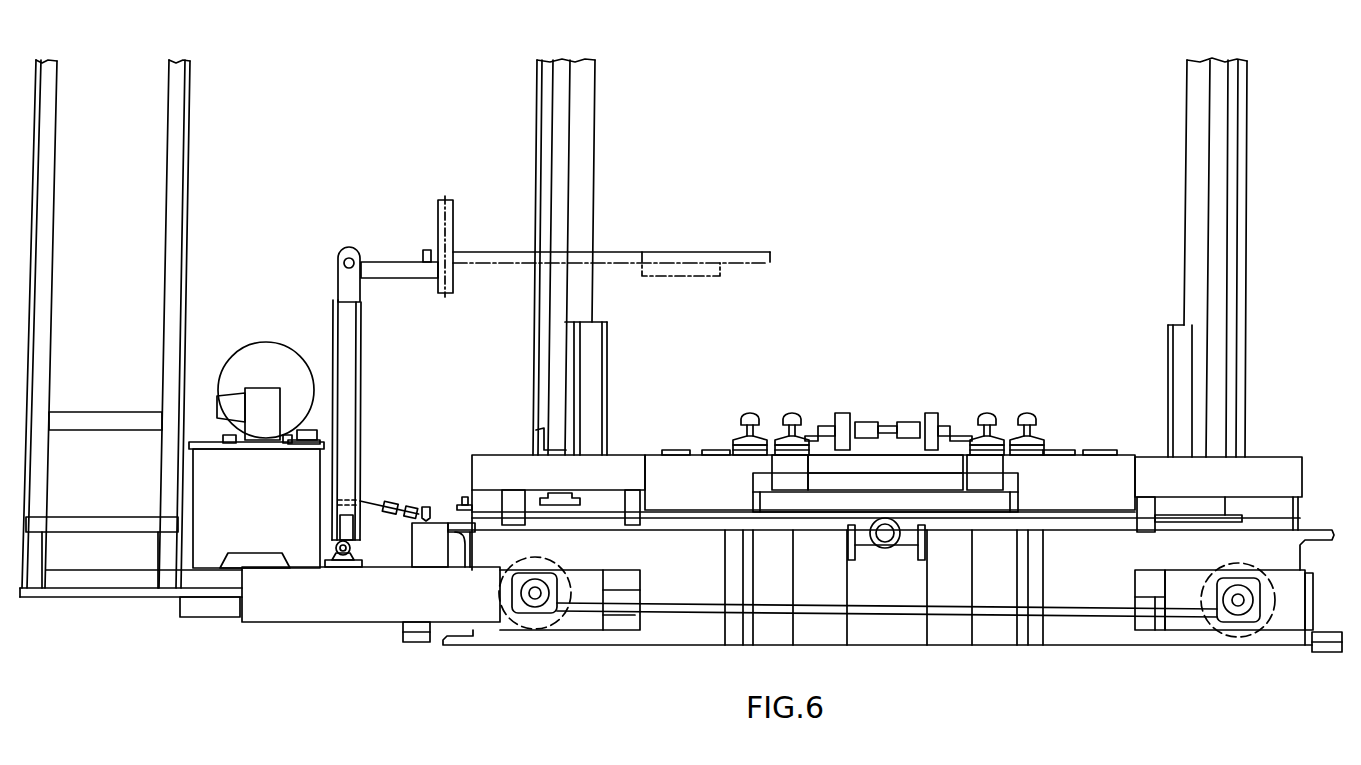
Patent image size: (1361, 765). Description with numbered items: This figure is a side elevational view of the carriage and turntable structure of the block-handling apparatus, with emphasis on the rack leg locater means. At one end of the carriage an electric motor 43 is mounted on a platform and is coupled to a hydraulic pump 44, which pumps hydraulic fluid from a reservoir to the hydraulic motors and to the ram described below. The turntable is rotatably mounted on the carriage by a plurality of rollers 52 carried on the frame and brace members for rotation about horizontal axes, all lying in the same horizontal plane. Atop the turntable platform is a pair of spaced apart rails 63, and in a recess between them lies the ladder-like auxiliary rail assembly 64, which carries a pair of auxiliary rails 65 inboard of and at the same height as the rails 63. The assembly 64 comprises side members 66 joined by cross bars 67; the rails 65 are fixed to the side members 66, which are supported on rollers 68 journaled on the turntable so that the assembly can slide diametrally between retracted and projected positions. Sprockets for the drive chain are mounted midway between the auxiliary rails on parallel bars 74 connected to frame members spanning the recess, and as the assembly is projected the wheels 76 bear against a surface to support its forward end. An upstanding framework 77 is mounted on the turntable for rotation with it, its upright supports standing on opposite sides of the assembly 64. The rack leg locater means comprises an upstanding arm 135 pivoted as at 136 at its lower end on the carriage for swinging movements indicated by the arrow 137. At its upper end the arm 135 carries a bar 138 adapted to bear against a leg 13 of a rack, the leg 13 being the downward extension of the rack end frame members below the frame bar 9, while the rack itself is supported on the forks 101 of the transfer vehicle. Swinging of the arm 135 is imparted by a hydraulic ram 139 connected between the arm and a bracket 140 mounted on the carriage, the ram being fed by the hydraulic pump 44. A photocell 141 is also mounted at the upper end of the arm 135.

The upper frame bar 9 is at (508, 246).
The leg 13 is at (455, 281).
The electric motor 43 is at (244, 353).
The hydraulic pump 44 is at (278, 390).
The roller 52 is at (888, 548).
The rail 63 is at (739, 414).
The auxiliary rail assembly 64 is at (961, 402).
The auxiliary rail 65 is at (792, 412).
The side member 66 is at (779, 485).
The cross bar 67 is at (862, 478).
The roller 68 is at (1006, 506).
The parallel bar 74 is at (905, 421).
The wheel 76 is at (843, 412).
The upstanding framework 77 is at (1270, 188).
The fork member 101 is at (693, 282).
The upstanding arm 135 is at (365, 362).
The pivot 136 is at (336, 548).
The arrow 137 is at (417, 292).
The bar 138 is at (423, 254).
The hydraulic ram 139 is at (400, 505).
The bracket 140 is at (431, 511).
The photocell 141 is at (350, 256).